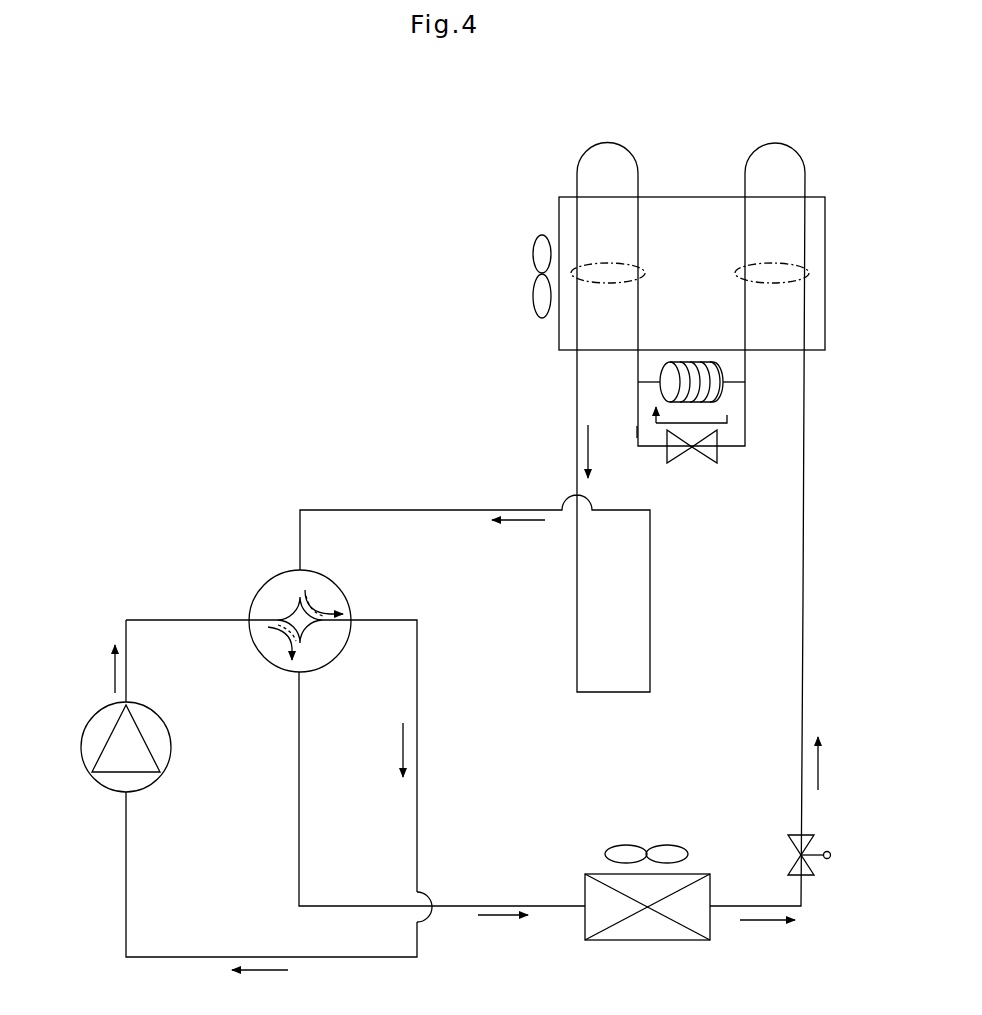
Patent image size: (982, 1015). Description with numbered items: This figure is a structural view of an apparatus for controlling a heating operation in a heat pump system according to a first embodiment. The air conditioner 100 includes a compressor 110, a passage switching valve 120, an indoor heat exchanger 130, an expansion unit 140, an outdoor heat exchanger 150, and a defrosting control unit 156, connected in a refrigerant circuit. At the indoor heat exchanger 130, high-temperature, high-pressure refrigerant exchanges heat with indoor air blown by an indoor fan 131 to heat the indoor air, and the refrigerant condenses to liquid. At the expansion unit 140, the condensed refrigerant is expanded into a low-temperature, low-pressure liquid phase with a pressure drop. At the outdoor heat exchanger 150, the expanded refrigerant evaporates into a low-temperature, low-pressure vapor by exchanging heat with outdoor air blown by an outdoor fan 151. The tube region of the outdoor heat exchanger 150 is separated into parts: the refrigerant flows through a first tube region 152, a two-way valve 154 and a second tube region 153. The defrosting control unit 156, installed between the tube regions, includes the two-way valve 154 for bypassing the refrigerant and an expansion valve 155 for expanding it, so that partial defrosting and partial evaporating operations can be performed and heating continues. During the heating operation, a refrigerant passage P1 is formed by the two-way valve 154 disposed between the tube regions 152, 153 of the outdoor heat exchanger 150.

The air conditioner 100 is at (297, 288).
The compressor 110 is at (102, 725).
The passage switching valve 120 is at (270, 588).
The indoor heat exchanger 130 is at (652, 928).
The indoor fan 131 is at (668, 850).
The expansion unit 140 is at (812, 835).
The outdoor heat exchanger 150 is at (825, 273).
The outdoor fan 151 is at (533, 295).
The first tube region 152 is at (770, 263).
The second tube region 153 is at (607, 263).
The two-way valve 154 is at (717, 455).
The expansion valve 155 is at (723, 372).
The defrosting control unit 156 is at (855, 373).
The refrigerant passage P1 is at (637, 432).